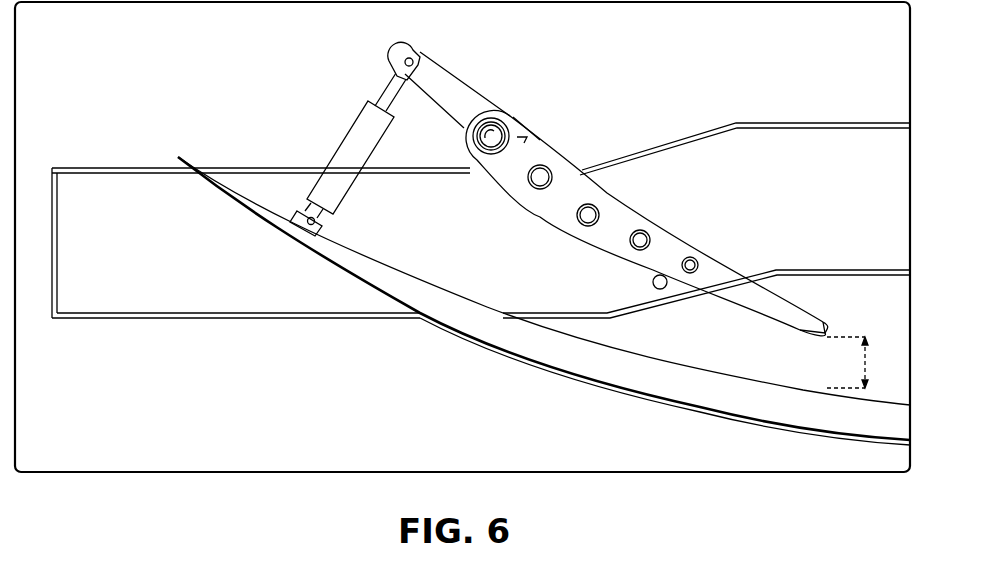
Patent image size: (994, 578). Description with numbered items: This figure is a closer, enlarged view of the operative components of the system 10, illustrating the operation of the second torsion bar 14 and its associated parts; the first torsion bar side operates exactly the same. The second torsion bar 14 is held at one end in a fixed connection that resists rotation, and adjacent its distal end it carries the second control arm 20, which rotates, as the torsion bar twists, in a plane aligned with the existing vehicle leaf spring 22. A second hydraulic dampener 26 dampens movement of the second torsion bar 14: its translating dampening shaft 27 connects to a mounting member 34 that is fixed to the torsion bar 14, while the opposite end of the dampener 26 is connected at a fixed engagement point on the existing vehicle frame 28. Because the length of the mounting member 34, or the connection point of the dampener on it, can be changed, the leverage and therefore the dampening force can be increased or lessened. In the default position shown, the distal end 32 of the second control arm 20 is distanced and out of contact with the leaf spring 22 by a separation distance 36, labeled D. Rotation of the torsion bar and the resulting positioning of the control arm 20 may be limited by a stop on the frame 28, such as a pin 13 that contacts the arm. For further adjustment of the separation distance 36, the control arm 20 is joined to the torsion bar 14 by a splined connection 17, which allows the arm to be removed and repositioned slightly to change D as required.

The system 10 is at (640, 108).
The pin 13 is at (652, 283).
The second torsion bar 14 is at (490, 135).
The splined connection 17 is at (523, 140).
The second control arm 20 is at (540, 140).
The leaf spring 22 is at (262, 217).
The second hydraulic dampener 26 is at (352, 124).
The translating dampening shaft 27 is at (392, 82).
The vehicle frame 28 is at (137, 182).
The distal end 32 is at (823, 322).
The mounting member 34 is at (450, 74).
The separation distance 36 is at (855, 367).